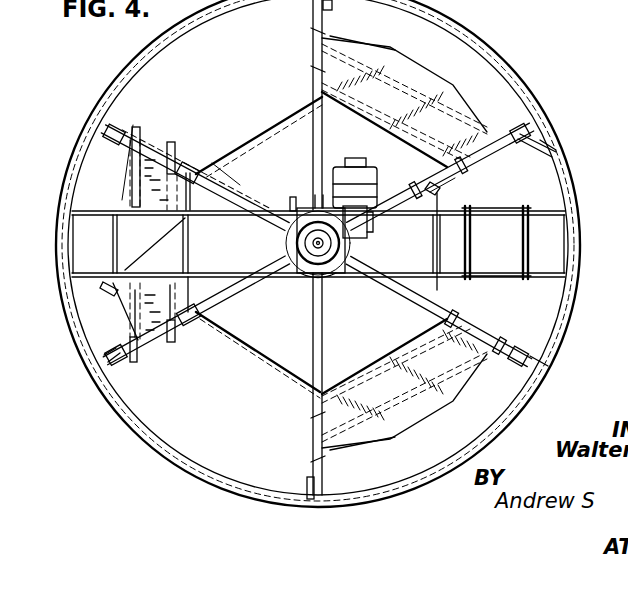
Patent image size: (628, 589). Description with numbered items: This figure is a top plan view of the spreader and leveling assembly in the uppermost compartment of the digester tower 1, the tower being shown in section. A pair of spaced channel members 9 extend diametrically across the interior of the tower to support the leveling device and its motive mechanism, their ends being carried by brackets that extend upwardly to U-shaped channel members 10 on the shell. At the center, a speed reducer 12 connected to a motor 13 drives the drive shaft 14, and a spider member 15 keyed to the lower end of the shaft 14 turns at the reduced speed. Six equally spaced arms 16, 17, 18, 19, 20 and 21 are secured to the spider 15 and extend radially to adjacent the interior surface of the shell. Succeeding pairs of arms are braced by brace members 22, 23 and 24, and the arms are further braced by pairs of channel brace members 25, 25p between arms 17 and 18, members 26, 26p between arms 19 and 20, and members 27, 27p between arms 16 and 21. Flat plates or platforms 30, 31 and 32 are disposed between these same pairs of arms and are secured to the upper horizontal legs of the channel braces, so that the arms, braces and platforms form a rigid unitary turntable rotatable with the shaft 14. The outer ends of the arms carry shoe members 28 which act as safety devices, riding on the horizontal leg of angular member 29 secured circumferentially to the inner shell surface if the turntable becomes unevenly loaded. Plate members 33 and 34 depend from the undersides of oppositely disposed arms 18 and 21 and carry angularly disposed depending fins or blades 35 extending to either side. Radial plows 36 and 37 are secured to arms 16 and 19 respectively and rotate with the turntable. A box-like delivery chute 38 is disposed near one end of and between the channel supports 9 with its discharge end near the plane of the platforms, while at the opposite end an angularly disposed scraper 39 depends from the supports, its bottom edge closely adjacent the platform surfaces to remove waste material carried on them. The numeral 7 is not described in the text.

The digester tower 1 is at (62, 158).
The U-shaped channel members 10 is at (176, 448).
The channel members 9 is at (78, 211).
The arm 20 is at (308, 137).
The arm 17 is at (323, 328).
The drive shaft 14 is at (303, 244).
The spider member 15 is at (311, 284).
The motor 13 is at (373, 182).
The speed reducer 12 is at (374, 228).
The upper right spoke 7 is at (580, 129).
The radial plow 37 is at (497, 152).
The angular member 29 is at (554, 152).
The arm 19 is at (424, 181).
The brace member 24 is at (276, 118).
The plate member 34 is at (190, 143).
The arm 21 is at (240, 192).
The brace member 22 is at (258, 356).
The arm 16 is at (236, 296).
The plate member 33 is at (462, 312).
The arm 18 is at (503, 366).
The fins or blades 35 is at (176, 130).
The plate or platform 31 is at (428, 72).
The channel brace member 26 is at (380, 107).
The channel brace member 26p is at (394, 52).
The plate or platform 30 is at (446, 430).
The channel brace member 25 is at (386, 363).
The channel brace member 25p is at (362, 455).
The plate or platform 32 is at (126, 190).
The scraper 39 is at (148, 240).
The channel brace member 27 is at (176, 296).
The channel brace member 27p is at (128, 335).
The radial plow 36 is at (120, 354).
The shoe members 28 is at (116, 108).
The delivery chute 38 is at (520, 240).
The brace member 23 is at (436, 237).